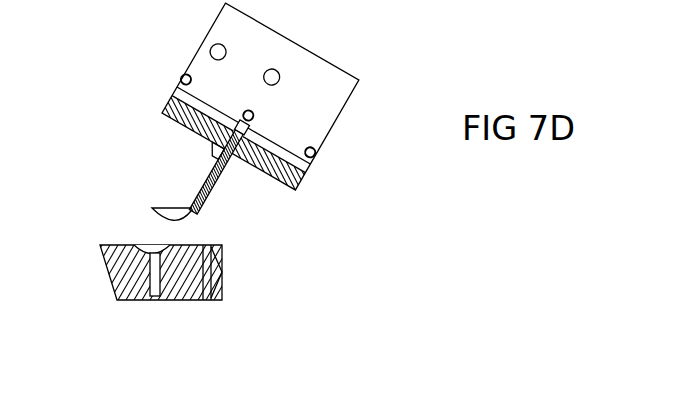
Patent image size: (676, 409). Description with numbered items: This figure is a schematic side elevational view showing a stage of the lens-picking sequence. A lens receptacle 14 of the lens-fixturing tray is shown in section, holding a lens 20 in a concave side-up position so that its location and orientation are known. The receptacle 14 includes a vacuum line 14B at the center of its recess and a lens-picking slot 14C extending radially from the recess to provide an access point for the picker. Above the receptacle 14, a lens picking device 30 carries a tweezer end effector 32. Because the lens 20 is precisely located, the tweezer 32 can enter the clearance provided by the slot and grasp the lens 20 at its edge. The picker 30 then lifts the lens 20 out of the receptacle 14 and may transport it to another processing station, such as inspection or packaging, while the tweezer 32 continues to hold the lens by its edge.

The lens picking device 30 is at (343, 110).
The tweezer end effector 32 is at (200, 178).
The lens 20 is at (162, 211).
The lens receptacle 14 is at (109, 275).
The vacuum line 14B is at (222, 283).
The lens-picking slot 14C is at (131, 300).